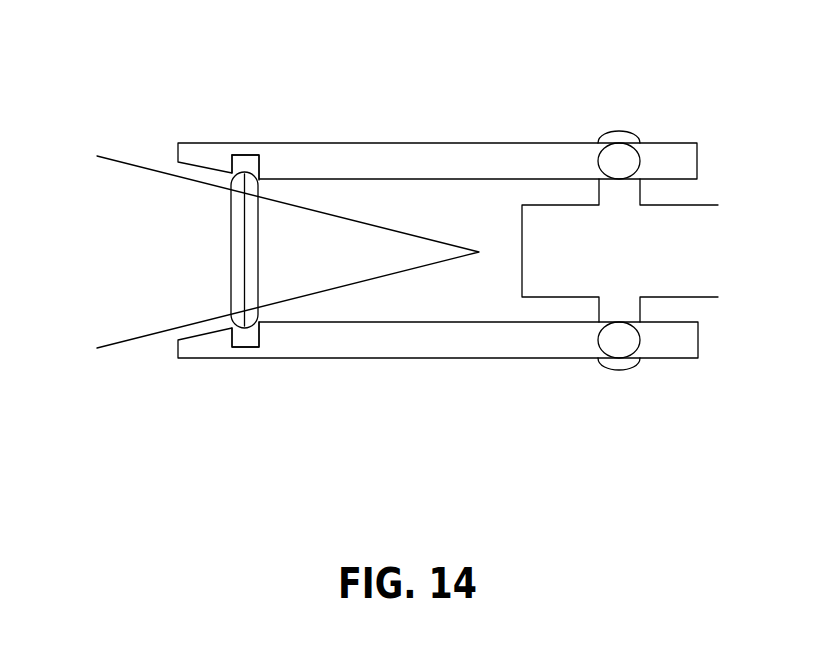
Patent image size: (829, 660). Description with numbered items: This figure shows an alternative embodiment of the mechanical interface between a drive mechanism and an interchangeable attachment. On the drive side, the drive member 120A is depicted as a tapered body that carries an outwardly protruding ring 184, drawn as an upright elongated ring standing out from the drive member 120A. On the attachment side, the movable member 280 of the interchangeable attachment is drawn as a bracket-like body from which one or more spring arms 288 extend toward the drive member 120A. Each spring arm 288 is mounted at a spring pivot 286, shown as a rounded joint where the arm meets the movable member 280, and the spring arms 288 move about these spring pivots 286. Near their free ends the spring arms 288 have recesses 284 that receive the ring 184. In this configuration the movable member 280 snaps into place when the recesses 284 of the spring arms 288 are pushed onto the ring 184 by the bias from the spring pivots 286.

The drive member 120A is at (143, 167).
The outwardly protruding ring 184 is at (238, 261).
The recesses 284 is at (243, 157).
The spring arms 288 is at (395, 143).
The spring pivots 286 is at (638, 150).
The movable member 280 is at (690, 205).